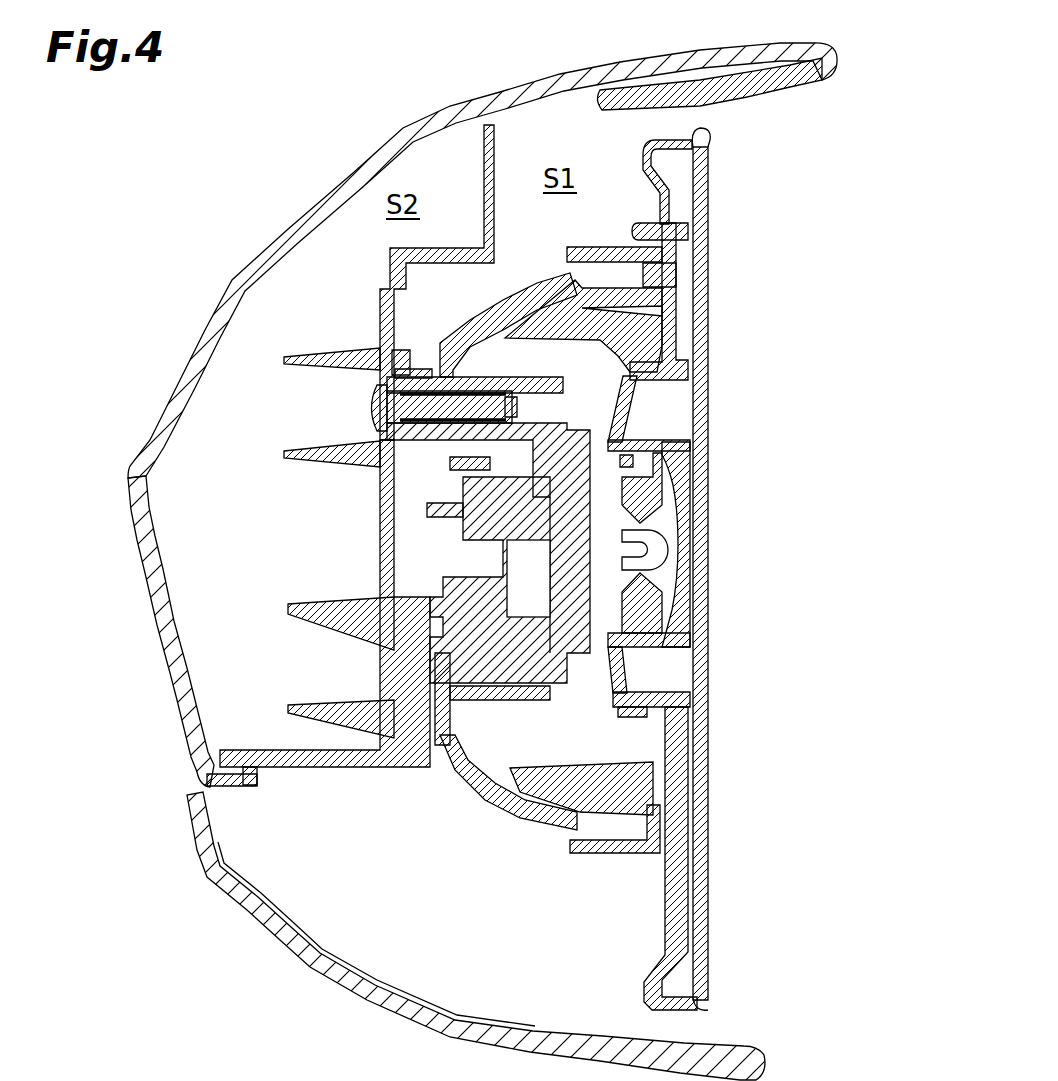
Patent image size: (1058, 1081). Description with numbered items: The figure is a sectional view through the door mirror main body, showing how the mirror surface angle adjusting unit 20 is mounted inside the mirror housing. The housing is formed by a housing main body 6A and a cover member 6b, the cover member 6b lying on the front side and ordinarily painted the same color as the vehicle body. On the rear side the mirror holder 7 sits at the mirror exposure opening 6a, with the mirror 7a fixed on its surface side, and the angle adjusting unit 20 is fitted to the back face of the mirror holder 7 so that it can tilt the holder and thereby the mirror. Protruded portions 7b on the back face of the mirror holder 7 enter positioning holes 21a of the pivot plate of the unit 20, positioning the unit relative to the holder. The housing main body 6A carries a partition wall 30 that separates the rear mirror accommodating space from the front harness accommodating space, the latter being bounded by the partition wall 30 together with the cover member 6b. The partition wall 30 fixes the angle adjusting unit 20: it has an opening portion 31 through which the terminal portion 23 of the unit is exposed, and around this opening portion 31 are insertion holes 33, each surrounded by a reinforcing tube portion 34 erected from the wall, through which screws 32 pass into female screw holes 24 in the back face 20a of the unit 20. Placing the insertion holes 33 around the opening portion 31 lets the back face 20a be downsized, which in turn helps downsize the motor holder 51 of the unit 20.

The cover member 6b is at (386, 149).
The housing main body 6A is at (746, 100).
The mirror exposure opening 6a is at (767, 604).
The partition wall 30 is at (385, 326).
The opening portion 31 is at (383, 526).
The screw 32 is at (372, 414).
The insertion hole 33 is at (417, 389).
The reinforcing tube portion 34 is at (332, 461).
The female screw hole 24 is at (486, 392).
The terminal portion 23 is at (433, 545).
The positioning hole 21a is at (660, 356).
The protruded portion 7b is at (607, 438).
The mirror 7a is at (710, 526).
The mirror holder 7 is at (673, 911).
The back face 20a is at (446, 722).
The motor holder 51 is at (467, 790).
The mirror surface angle adjusting unit 20 is at (500, 816).